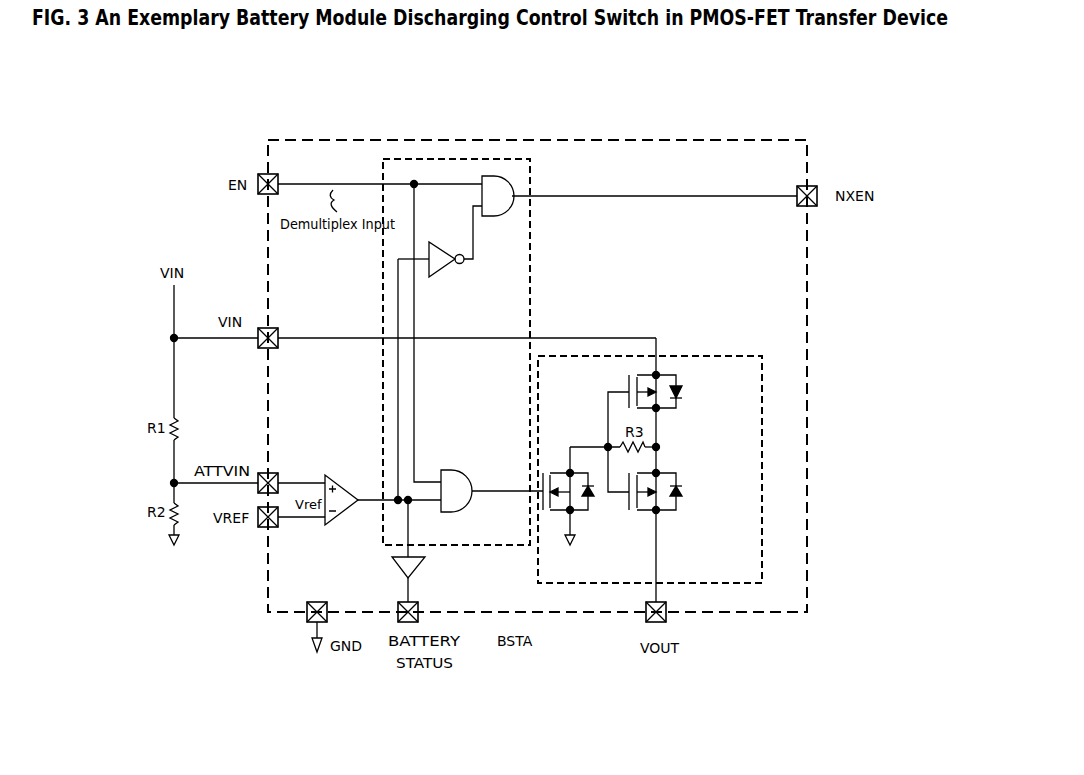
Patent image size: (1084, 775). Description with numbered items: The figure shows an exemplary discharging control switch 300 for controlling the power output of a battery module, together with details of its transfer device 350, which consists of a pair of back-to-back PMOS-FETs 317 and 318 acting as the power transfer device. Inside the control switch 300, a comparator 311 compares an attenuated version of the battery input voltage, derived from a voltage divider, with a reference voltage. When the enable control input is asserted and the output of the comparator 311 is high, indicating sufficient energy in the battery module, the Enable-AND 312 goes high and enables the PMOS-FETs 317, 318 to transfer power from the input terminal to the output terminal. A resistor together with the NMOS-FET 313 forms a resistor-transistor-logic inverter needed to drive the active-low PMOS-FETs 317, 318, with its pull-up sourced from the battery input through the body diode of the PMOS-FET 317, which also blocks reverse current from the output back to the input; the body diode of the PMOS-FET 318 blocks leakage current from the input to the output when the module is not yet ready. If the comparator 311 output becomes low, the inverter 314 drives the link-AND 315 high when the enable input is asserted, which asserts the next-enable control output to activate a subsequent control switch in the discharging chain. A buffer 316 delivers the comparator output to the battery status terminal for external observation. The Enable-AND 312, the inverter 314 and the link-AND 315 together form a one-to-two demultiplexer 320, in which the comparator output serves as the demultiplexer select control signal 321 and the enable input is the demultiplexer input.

The discharging control switch 300 is at (628, 111).
The comparator 311 is at (350, 520).
The Enable-AND 312 is at (462, 512).
The NMOS-FET 313 is at (586, 511).
The inverter 314 is at (445, 273).
The link-AND 315 is at (504, 216).
The buffer 316 is at (424, 569).
The PMOS-FET 317 is at (682, 404).
The PMOS-FET 318 is at (680, 511).
The 1:2 demultiplexer 320 is at (532, 291).
The demultiplexer select control signal 321 is at (372, 494).
The transfer device 350 is at (735, 354).